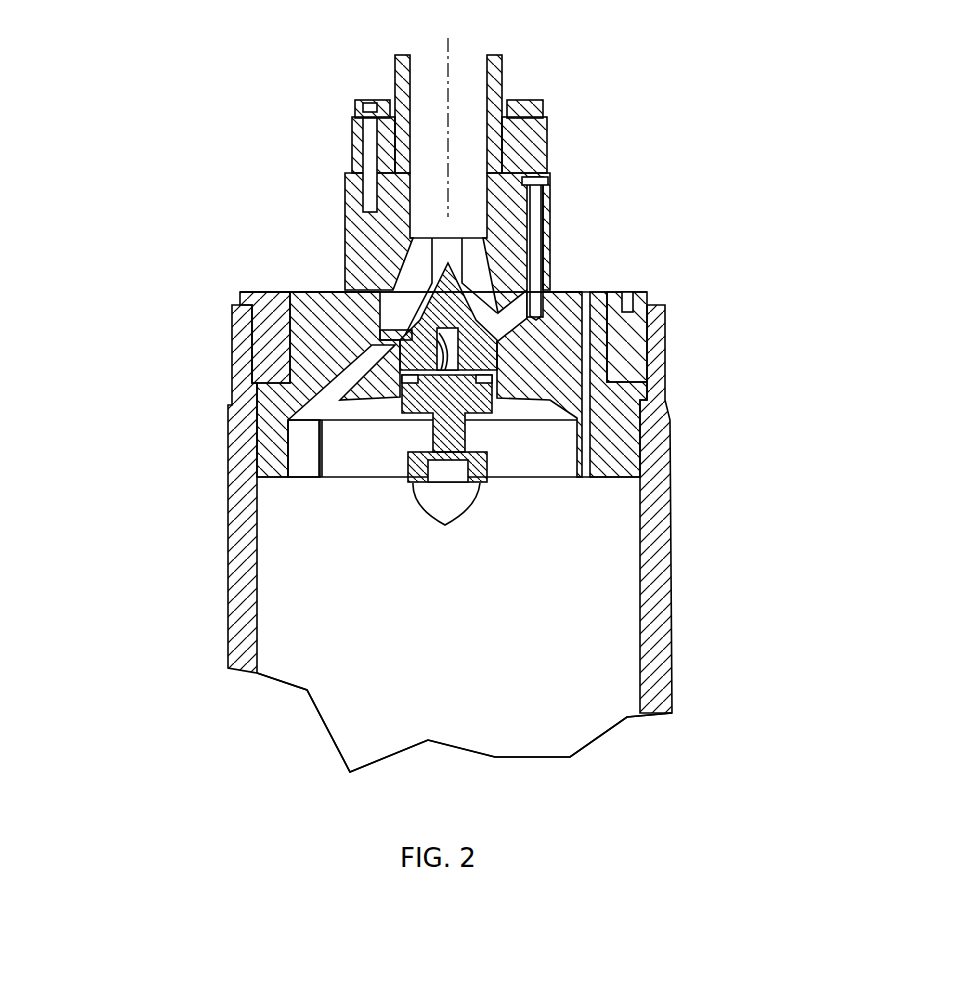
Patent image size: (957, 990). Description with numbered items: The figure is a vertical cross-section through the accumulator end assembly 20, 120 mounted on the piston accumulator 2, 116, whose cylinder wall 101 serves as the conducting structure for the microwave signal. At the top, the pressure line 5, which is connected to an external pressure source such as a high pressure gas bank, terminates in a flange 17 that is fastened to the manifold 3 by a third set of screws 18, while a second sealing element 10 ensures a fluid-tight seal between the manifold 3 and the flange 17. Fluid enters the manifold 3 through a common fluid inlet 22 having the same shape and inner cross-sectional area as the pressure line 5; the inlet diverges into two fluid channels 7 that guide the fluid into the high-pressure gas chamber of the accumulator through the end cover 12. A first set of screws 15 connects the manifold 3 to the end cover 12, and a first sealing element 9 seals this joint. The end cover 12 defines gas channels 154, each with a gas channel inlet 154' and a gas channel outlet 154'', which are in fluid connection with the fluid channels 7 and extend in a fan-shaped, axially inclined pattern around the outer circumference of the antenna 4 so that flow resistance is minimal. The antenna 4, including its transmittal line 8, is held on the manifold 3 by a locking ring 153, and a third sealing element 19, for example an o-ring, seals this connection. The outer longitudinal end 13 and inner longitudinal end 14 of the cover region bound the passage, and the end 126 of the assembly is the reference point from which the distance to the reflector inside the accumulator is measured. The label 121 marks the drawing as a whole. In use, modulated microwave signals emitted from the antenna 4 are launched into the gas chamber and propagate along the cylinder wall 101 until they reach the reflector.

The piston accumulator 2 is at (176, 647).
The piston accumulator 116 is at (176, 647).
The manifold 3 is at (552, 205).
The antenna 4 is at (467, 432).
The pressure line 5 is at (395, 70).
The fluid channel 7 is at (473, 288).
The transmittal line 8 is at (535, 330).
The first sealing element 9 is at (540, 268).
The second sealing element 10 is at (493, 157).
The end cover 12 is at (578, 292).
The outer longitudinal end 13 is at (345, 288).
The inner longitudinal end 14 is at (325, 462).
The first set of screws 15 is at (548, 178).
The flange 17 is at (352, 142).
The third set of screws 18 is at (356, 100).
The third sealing element 19 is at (497, 370).
The accumulator end assembly 20 is at (727, 307).
The accumulator end assembly 120 is at (727, 307).
The common fluid inlet 22 is at (448, 200).
The accumulator cylinder wall 101 is at (228, 563).
The dispensing device 121 is at (812, 139).
The end of the assembly 126 is at (446, 520).
The locking ring 153 is at (495, 382).
The gas channel 154 is at (218, 434).
The gas channel inlet 154' is at (293, 486).
The gas channel outlet 154'' is at (279, 384).